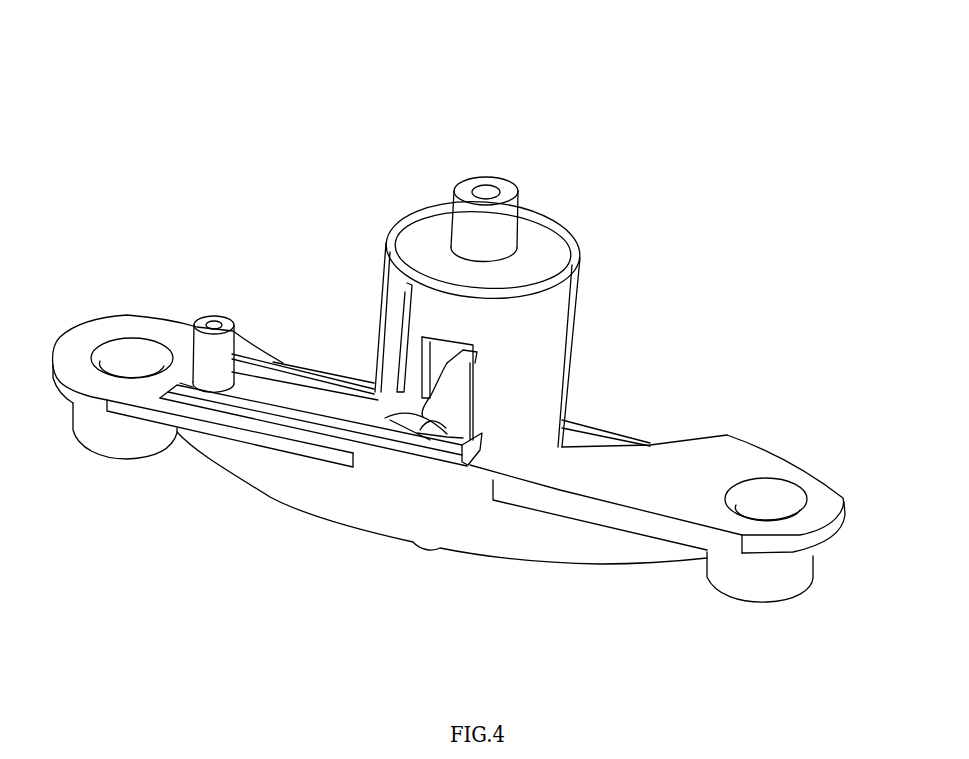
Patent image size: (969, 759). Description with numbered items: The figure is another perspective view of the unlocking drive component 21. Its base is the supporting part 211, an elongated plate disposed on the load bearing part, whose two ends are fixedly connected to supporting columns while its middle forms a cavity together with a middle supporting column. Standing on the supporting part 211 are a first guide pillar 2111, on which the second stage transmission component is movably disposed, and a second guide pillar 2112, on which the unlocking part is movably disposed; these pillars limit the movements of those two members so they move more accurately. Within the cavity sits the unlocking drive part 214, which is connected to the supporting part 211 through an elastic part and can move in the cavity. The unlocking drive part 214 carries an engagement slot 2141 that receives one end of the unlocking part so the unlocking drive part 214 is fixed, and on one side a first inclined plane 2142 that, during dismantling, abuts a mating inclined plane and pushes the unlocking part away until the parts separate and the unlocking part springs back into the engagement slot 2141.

The unlocking drive component 21 is at (608, 172).
The supporting part 211 is at (150, 318).
The first guide pillar 2111 is at (487, 177).
The second guide pillar 2112 is at (214, 315).
The unlocking drive part 214 is at (458, 415).
The engagement slot 2141 is at (447, 383).
The first inclined plane 2142 is at (442, 387).